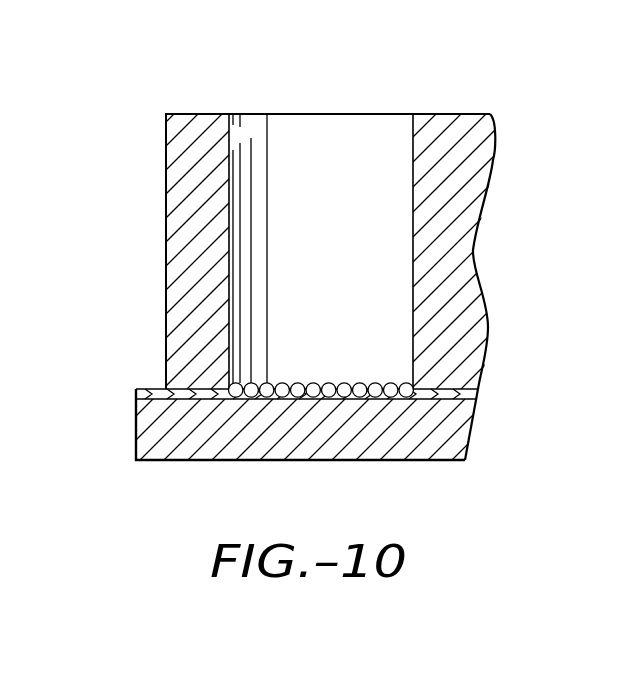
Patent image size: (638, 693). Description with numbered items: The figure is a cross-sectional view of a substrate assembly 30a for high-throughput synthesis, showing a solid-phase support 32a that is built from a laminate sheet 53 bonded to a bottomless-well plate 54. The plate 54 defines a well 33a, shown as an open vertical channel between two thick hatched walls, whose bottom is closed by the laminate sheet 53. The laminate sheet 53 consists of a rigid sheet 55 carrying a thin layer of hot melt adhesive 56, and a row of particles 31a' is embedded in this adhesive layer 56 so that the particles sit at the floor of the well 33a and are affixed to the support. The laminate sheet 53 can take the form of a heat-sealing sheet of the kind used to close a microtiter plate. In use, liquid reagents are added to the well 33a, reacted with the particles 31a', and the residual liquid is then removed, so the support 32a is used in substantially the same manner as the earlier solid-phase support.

The nozzle assembly 30a is at (458, 100).
The solid-phase support 32a is at (165, 222).
The well 33a is at (229, 147).
The bottomless-well plate 54 is at (165, 291).
The laminate sheet 53 is at (137, 394).
The rigid sheet 55 is at (142, 432).
The layer of hot melt adhesive 56 is at (470, 392).
The particles 31a' is at (323, 443).